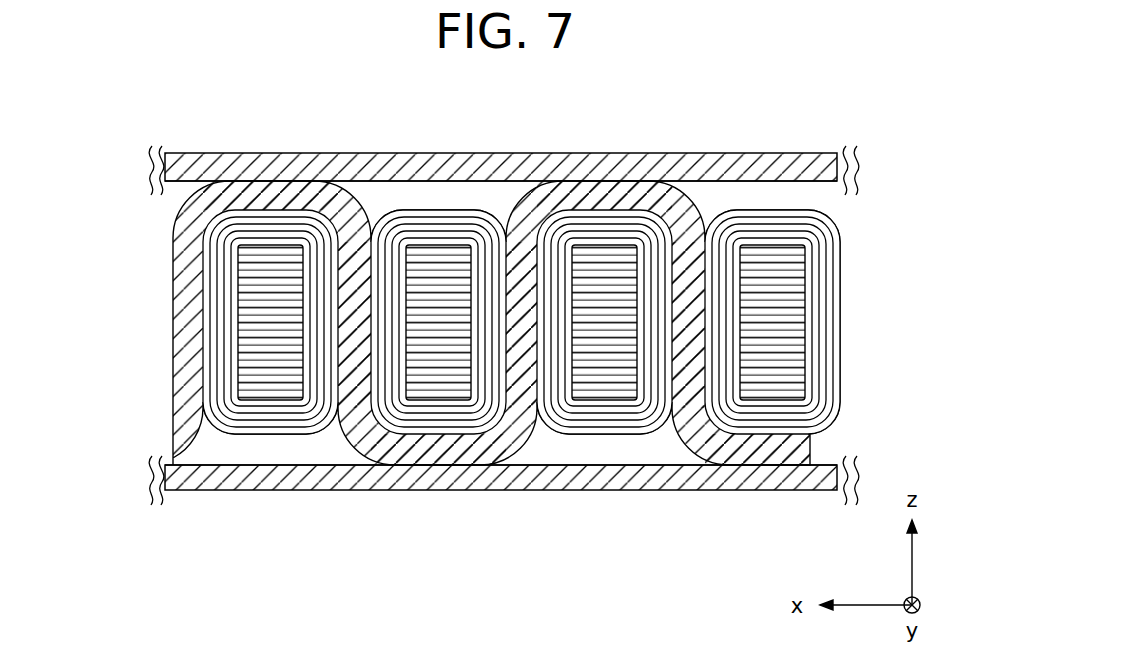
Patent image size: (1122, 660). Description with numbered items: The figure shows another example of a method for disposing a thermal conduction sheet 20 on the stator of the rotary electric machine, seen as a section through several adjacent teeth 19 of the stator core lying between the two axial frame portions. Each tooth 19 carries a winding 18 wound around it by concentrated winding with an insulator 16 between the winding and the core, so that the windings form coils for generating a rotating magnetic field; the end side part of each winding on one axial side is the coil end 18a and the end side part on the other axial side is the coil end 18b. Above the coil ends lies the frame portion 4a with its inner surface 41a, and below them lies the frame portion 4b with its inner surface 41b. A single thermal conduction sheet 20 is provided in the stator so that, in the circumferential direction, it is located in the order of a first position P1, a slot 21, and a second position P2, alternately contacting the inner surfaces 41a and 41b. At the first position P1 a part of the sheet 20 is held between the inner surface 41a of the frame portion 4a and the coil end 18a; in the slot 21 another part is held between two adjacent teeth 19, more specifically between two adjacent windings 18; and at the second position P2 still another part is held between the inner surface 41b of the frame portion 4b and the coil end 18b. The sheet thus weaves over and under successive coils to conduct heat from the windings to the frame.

The frame portion 4a is at (207, 176).
The frame portion 4b is at (208, 476).
The insulator 16 is at (237, 252).
The winding 18 is at (470, 325).
The coil end 18a is at (268, 223).
The coil end 18b is at (268, 428).
The tooth 19 is at (273, 347).
The thermal conduction sheet 20 is at (190, 390).
The slot 21 is at (355, 307).
The inner surface 41a is at (739, 181).
The inner surface 41b is at (569, 465).
The first position P1 is at (283, 200).
The second position P2 is at (447, 443).